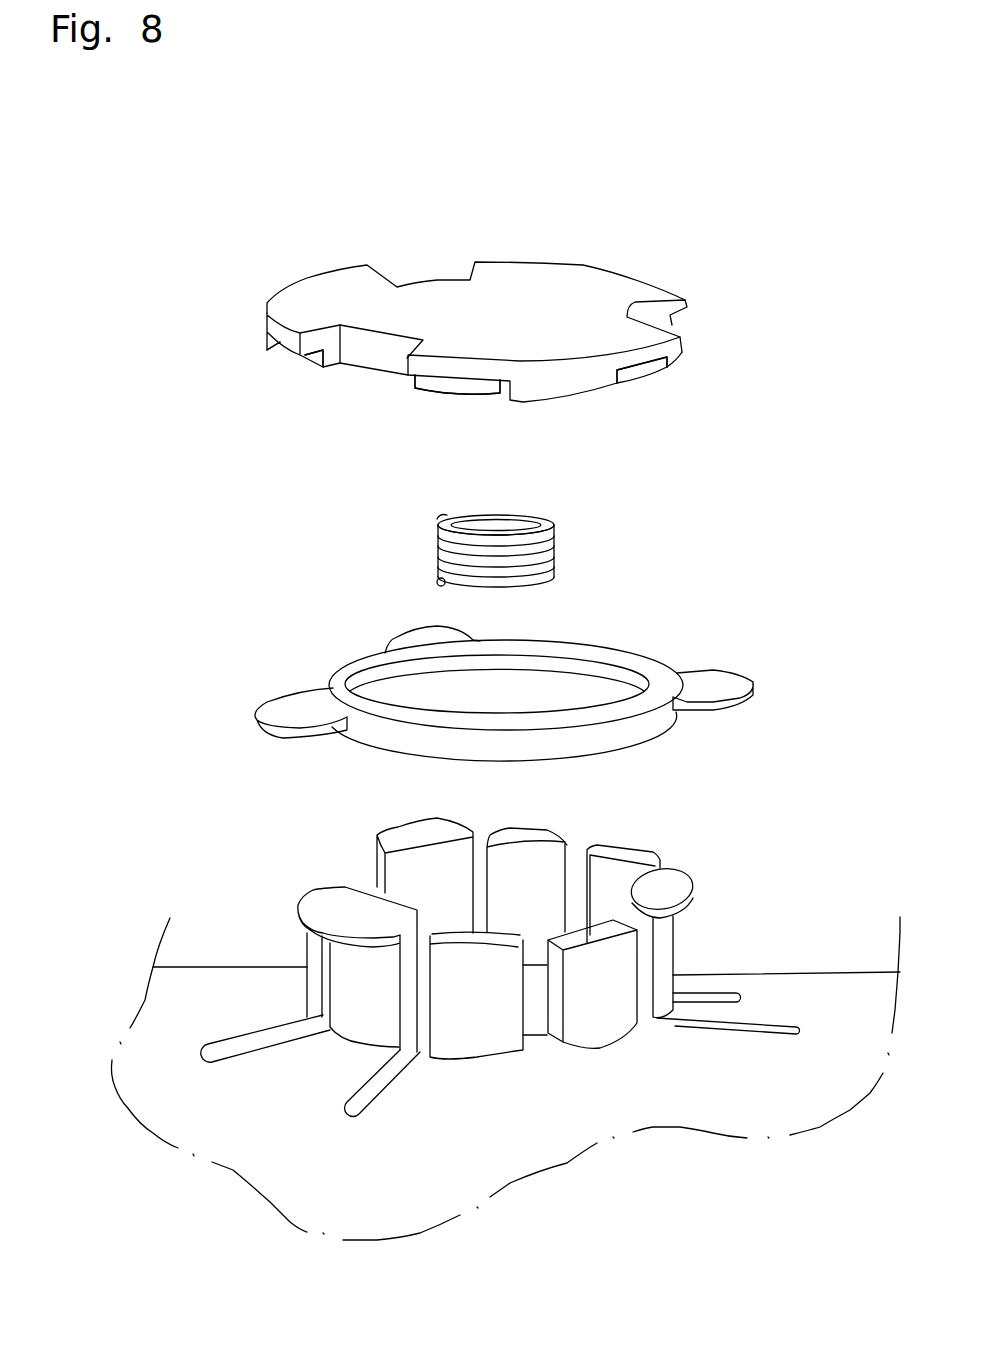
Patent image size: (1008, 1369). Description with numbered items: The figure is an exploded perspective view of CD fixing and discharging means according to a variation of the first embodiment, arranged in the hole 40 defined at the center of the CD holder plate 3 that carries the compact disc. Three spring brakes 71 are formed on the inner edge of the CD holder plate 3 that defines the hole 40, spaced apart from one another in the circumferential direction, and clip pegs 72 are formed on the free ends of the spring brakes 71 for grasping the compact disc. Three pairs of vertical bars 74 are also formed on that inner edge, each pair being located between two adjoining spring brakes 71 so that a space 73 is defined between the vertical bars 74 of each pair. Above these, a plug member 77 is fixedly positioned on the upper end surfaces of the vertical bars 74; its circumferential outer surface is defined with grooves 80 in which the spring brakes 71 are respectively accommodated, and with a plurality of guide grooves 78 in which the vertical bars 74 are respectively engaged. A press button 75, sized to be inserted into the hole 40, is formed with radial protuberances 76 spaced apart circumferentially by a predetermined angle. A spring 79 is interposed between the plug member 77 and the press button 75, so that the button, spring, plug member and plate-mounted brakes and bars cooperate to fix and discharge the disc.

The CD holder plate 3 is at (827, 987).
The hole 40 is at (497, 960).
The spring brakes 71 is at (443, 852).
The clip pegs 72 is at (417, 825).
The space 73 is at (533, 1037).
The vertical bars 74 is at (483, 1050).
The press button 75 is at (497, 664).
The radial protuberances 76 is at (413, 638).
The plug member 77 is at (525, 324).
The guide grooves 78 is at (303, 355).
The spring 79 is at (555, 538).
The grooves 80 is at (437, 280).